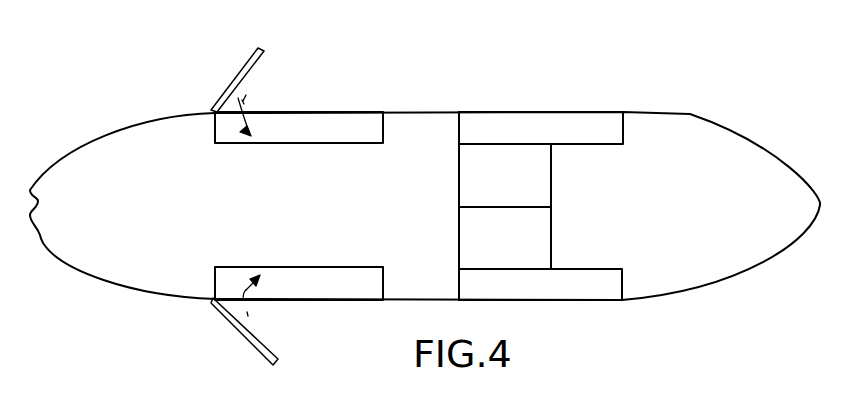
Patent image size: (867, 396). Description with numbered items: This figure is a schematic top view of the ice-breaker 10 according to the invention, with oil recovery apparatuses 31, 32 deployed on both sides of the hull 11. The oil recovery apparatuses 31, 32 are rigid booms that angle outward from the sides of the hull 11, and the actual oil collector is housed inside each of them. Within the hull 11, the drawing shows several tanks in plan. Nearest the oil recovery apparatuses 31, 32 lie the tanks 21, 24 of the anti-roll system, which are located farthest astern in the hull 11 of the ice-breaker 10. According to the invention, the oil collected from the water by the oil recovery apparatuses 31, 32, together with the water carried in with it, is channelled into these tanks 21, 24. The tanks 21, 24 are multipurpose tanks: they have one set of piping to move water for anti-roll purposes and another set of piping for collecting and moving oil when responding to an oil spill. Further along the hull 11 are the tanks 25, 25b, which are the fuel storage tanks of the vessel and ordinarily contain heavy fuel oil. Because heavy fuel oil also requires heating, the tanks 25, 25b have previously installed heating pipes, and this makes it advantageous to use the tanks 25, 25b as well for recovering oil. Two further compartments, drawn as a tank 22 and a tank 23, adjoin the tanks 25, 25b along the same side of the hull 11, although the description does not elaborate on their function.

The ice-breaker 10 is at (672, 97).
The hull 11 is at (718, 264).
The tank 21 is at (302, 123).
The rear upper pocket 22 is at (540, 119).
The rear lower pocket 23 is at (588, 293).
The tank 24 is at (327, 290).
The tank 25 is at (545, 183).
The tank 25b is at (545, 246).
The oil recovery apparatus 31 is at (242, 72).
The oil recovery apparatus 32 is at (255, 344).